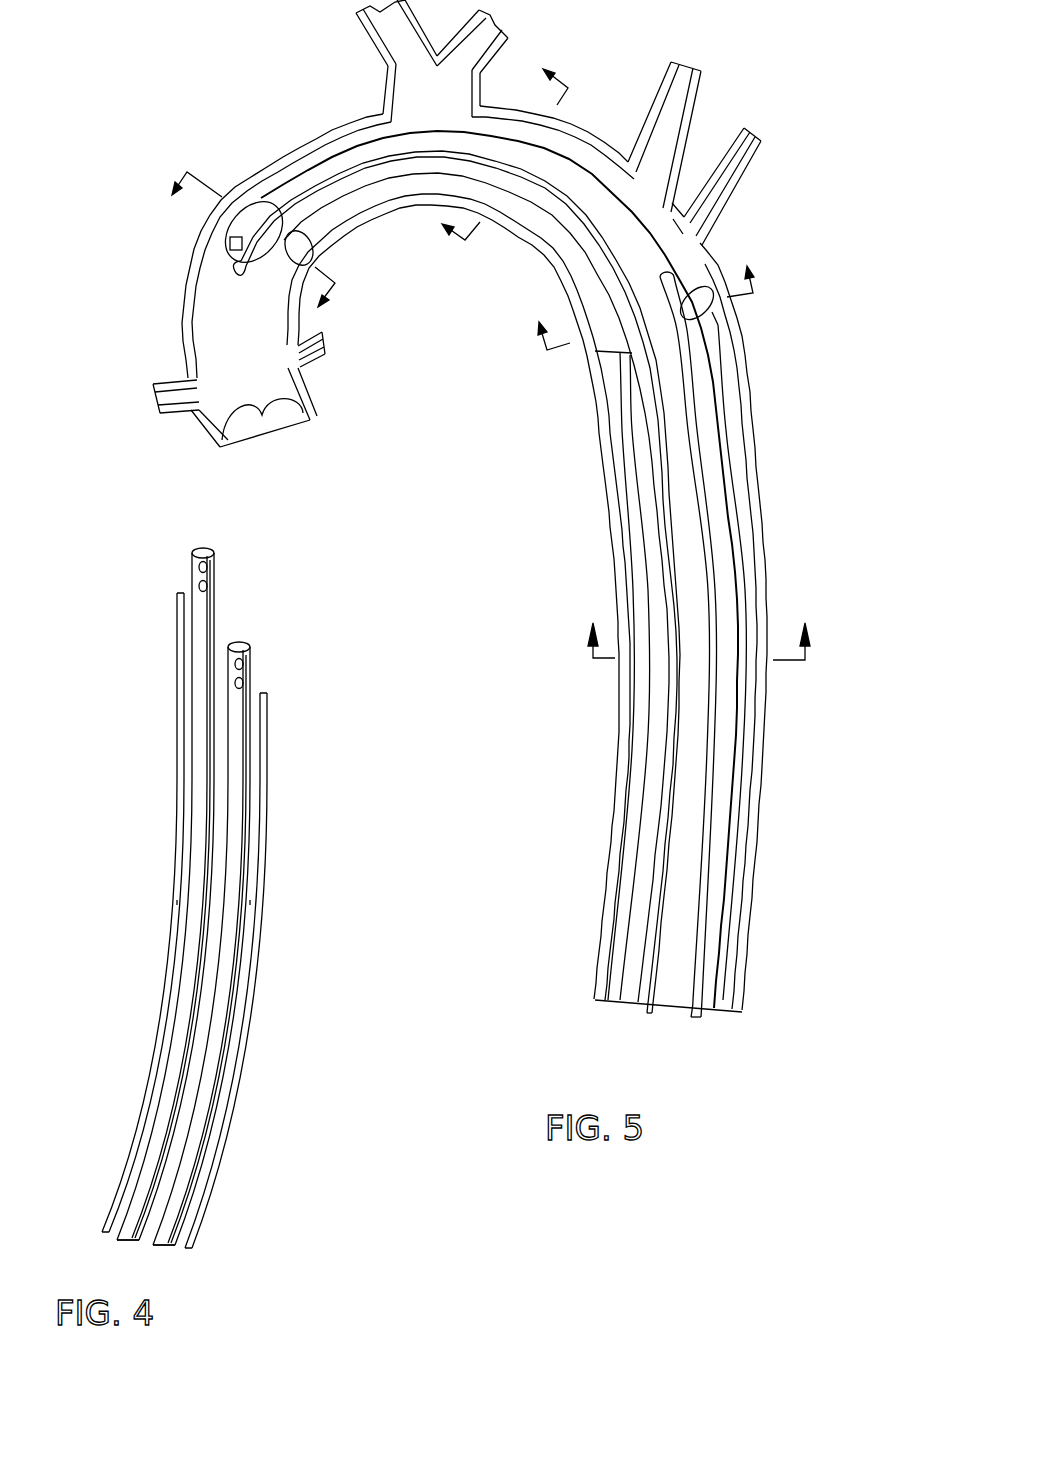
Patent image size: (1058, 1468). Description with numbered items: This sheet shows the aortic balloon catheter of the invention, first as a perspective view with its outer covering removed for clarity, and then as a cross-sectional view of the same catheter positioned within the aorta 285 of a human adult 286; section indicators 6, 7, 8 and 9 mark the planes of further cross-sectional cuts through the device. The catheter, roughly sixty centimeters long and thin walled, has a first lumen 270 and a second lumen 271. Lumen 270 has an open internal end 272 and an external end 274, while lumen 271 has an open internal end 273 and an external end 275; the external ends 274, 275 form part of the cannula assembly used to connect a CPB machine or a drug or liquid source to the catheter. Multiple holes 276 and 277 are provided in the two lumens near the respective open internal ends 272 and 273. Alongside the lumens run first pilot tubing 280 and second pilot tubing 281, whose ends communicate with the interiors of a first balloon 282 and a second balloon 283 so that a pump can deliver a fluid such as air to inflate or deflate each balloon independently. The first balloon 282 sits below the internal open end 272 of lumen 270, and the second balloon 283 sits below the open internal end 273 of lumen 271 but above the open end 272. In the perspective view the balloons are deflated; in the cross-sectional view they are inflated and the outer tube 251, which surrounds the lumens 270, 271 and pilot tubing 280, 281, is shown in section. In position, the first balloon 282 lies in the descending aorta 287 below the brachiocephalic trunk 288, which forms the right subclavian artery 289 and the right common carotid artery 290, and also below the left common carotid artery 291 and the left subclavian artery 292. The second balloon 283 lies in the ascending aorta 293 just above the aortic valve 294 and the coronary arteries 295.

In FIG. 5, the outer tube 251 is at (313, 178).
In FIG. 5, the first lumen 270 is at (710, 797).
In FIG. 4, the first lumen 270 is at (243, 662).
In FIG. 5, the second lumen 271 is at (663, 817).
In FIG. 4, the second lumen 271 is at (213, 615).
In FIG. 5, the open internal end 272 is at (670, 268).
In FIG. 4, the open internal end 272 is at (240, 647).
In FIG. 5, the open internal end 273 is at (235, 270).
In FIG. 4, the open internal end 273 is at (207, 549).
In FIG. 5, the external end 274 is at (683, 1017).
In FIG. 4, the external end 274 is at (160, 1247).
In FIG. 5, the external end 275 is at (650, 1017).
In FIG. 4, the external end 275 is at (130, 1238).
In FIG. 4, the holes 276 is at (243, 665).
In FIG. 4, the holes 277 is at (204, 587).
In FIG. 5, the first pilot tubing 280 is at (727, 845).
In FIG. 4, the first pilot tubing 280 is at (247, 1033).
In FIG. 5, the second pilot tubing 281 is at (383, 187).
In FIG. 4, the second pilot tubing 281 is at (155, 1046).
In FIG. 5, the first balloon 282 is at (710, 316).
In FIG. 4, the first balloon 282 is at (267, 740).
In FIG. 5, the second balloon 283 is at (312, 250).
In FIG. 4, the second balloon 283 is at (178, 616).
In FIG. 5, the aorta 285 is at (763, 545).
In FIG. 5, the human adult 286 is at (763, 238).
In FIG. 5, the descending aorta 287 is at (733, 350).
In FIG. 5, the brachiocephalic trunk 288 is at (385, 85).
In FIG. 5, the right subclavian artery 289 is at (360, 33).
In FIG. 5, the right common carotid artery 290 is at (503, 33).
In FIG. 5, the left common carotid artery 291 is at (690, 112).
In FIG. 5, the left subclavian artery 292 is at (757, 150).
In FIG. 5, the ascending aorta 293 is at (270, 163).
In FIG. 5, the aortic valve 294 is at (273, 430).
In FIG. 5, the coronary arteries 295 is at (170, 380).
In FIG. 5, the section line 6- 6 is at (702, 627).
In FIG. 5, the section line 7- 7 is at (633, 298).
In FIG. 5, the section line 8- 8 is at (493, 146).
In FIG. 5, the section line 9- 9 is at (246, 247).